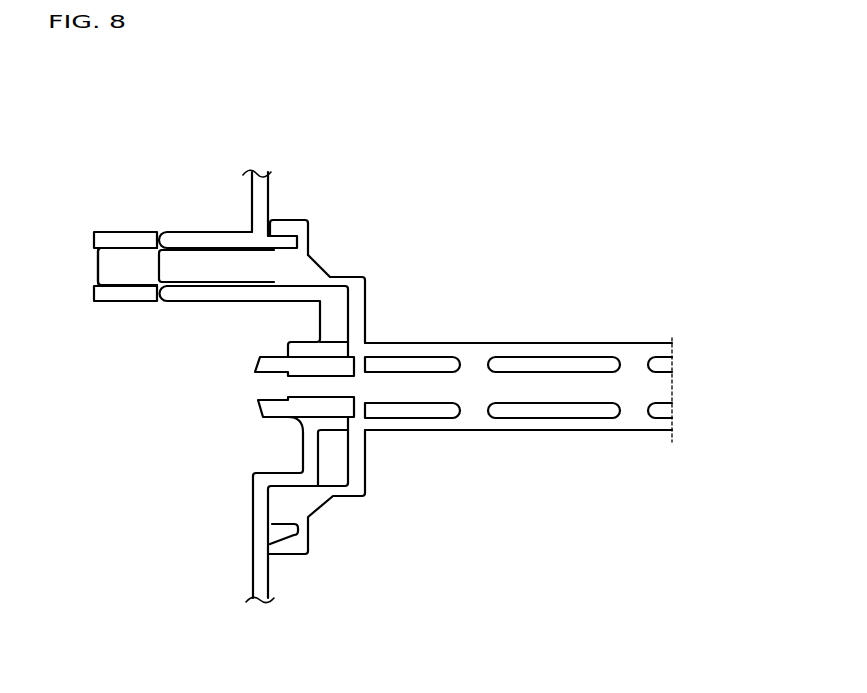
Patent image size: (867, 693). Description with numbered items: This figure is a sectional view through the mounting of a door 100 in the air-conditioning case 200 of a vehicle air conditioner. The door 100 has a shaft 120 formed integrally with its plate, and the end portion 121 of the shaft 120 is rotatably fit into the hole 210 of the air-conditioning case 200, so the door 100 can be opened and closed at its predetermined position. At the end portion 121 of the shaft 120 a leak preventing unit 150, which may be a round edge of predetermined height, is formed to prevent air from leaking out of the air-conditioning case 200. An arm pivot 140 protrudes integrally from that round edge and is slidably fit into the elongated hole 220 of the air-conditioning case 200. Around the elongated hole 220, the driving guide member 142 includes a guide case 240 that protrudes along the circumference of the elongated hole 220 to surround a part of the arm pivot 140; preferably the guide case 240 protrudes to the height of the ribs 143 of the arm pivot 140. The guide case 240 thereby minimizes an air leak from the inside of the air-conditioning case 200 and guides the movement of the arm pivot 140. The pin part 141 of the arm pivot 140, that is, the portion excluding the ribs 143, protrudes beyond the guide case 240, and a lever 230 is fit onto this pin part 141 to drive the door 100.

The door 100 is at (518, 341).
The shaft 120 is at (634, 364).
The end portion 121 is at (262, 412).
The arm pivot 140 is at (113, 258).
The pin part 141 is at (127, 266).
The driving guide member 142 is at (222, 180).
The ribs 143 is at (180, 262).
The leak preventing unit 150 is at (284, 228).
The air-conditioning case 200 is at (228, 569).
The hole 210 is at (292, 364).
The elongated hole 220 is at (292, 275).
The lever 230 is at (110, 298).
The guide case 240 is at (222, 240).